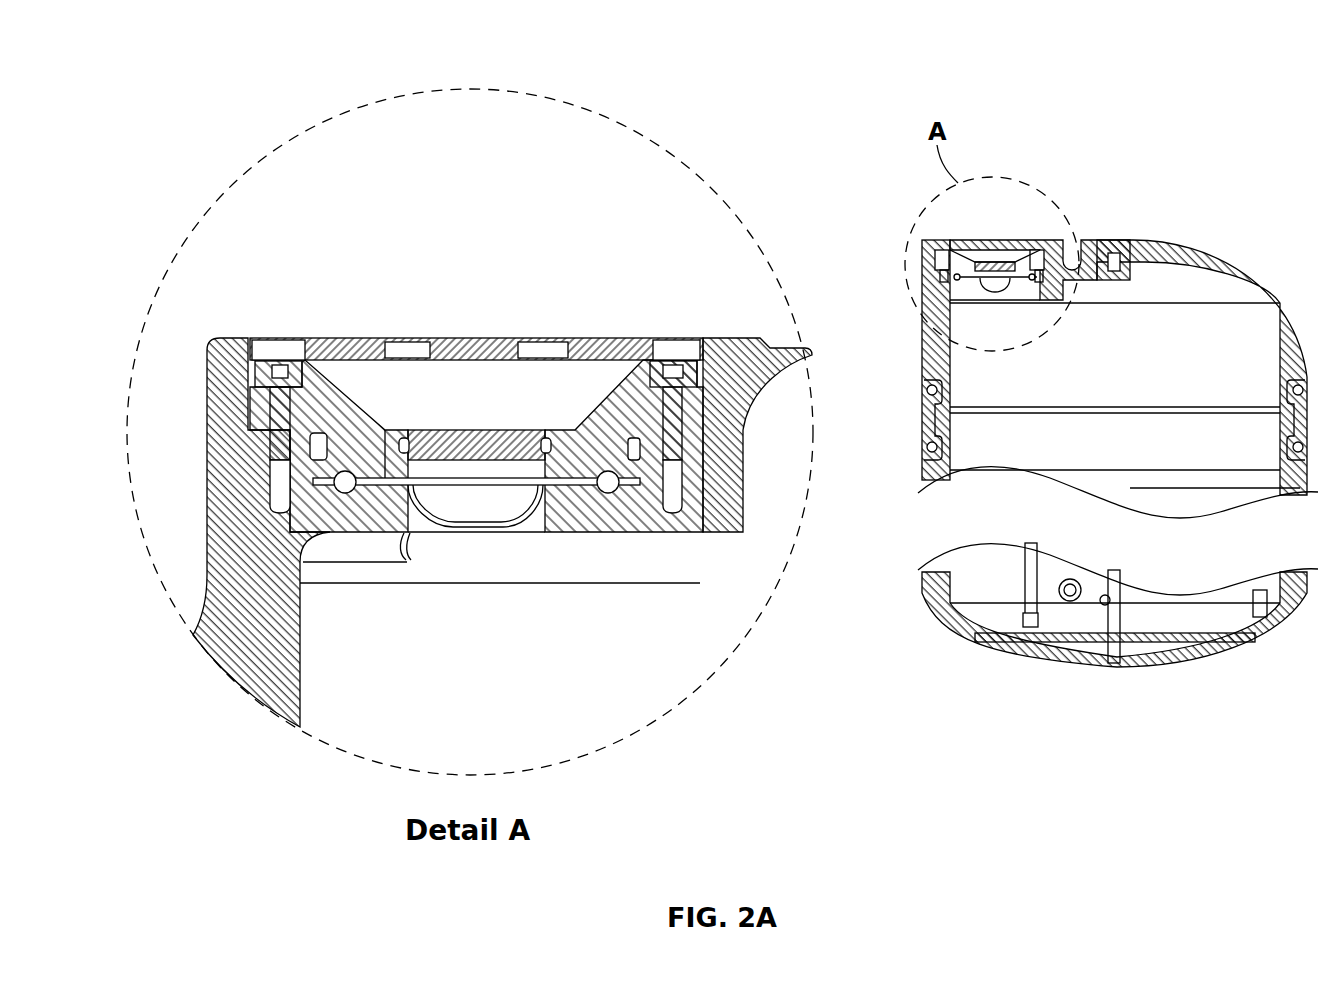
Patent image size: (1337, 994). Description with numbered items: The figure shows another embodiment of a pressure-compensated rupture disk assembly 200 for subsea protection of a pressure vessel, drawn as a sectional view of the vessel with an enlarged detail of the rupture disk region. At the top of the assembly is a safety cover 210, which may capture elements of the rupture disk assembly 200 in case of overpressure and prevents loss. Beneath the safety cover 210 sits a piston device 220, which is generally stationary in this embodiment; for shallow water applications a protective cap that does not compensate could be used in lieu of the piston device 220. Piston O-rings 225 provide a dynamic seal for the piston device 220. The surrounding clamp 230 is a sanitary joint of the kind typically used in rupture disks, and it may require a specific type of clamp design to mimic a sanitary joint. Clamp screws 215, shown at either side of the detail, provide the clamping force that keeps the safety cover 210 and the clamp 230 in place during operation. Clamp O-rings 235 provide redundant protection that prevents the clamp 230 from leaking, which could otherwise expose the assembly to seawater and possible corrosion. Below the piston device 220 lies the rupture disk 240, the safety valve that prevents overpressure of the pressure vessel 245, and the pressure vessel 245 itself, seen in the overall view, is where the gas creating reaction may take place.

The pressure-compensated rupture disk assembly 200 is at (216, 53).
The safety cover 210 is at (618, 340).
The clamp screws 215 is at (667, 360).
The piston device 220 is at (468, 425).
The piston O-rings 225 is at (543, 430).
The clamp 230 is at (705, 430).
The clamp O-rings 235 is at (640, 455).
The rupture disk 240 is at (540, 484).
The pressure vessel 245 is at (697, 534).